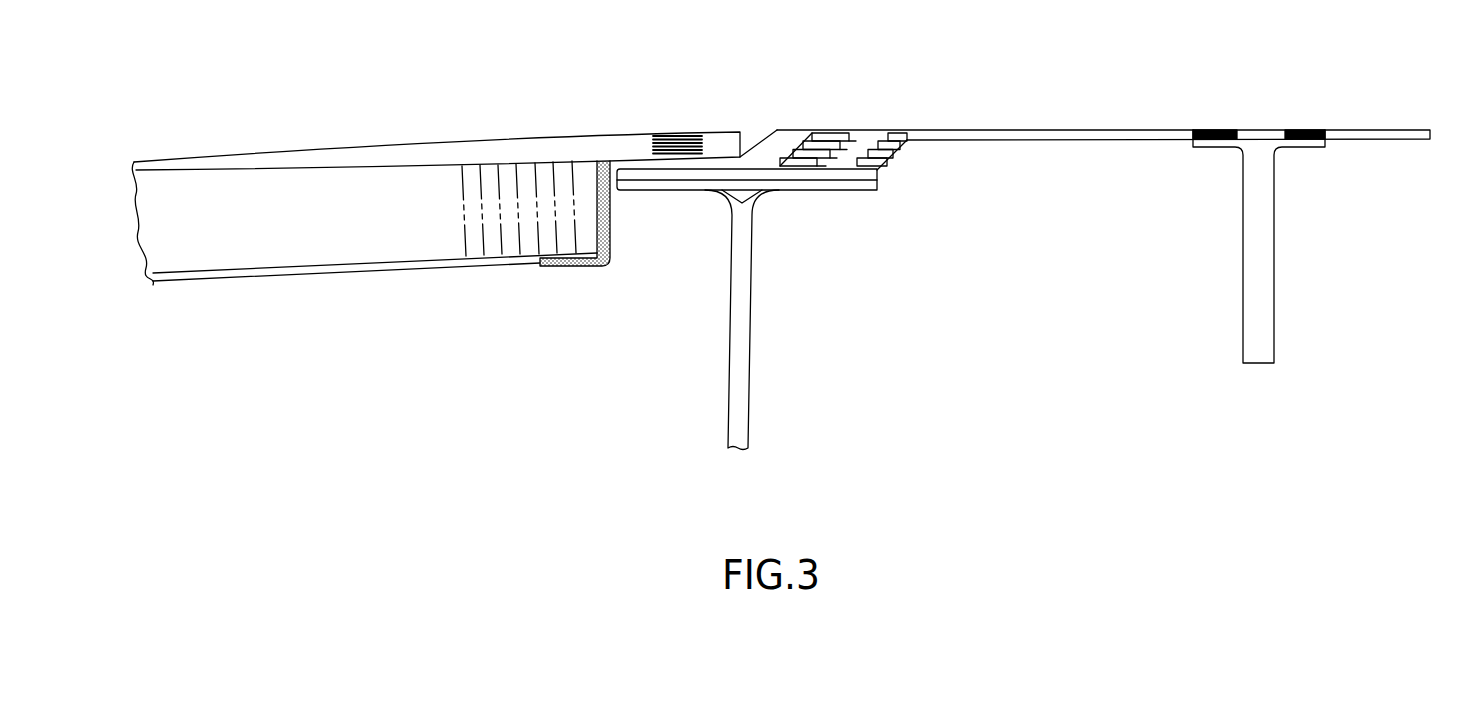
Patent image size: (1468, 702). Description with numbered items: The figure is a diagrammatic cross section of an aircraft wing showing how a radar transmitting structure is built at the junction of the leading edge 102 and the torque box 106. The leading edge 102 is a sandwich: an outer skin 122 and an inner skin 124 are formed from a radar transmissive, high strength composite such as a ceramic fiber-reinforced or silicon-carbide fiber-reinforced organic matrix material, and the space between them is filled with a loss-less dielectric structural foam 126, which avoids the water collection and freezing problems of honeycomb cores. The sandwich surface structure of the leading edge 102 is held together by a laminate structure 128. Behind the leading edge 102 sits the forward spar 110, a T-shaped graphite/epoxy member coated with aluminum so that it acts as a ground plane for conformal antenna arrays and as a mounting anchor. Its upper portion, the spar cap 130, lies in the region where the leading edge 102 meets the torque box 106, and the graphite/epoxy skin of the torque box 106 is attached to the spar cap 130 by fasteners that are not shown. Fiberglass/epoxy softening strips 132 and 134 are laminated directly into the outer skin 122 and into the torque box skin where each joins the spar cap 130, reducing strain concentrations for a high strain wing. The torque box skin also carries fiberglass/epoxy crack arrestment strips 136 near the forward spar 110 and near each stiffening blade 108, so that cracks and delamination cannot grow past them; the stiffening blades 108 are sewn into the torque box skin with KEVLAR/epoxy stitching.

The leading edge 102 is at (137, 203).
The torque box 106 is at (1088, 133).
The stiffening blade 108 is at (1247, 247).
The forward spar 110 is at (744, 338).
The outer skin 122 is at (325, 160).
The inner skin 124 is at (355, 270).
The structural foam 126 is at (255, 253).
The laminate structure 128 is at (613, 237).
The spar cap 130 is at (878, 180).
The softening strip 132 is at (688, 133).
The softening strip 134 is at (836, 132).
The crack arrestment strip 136 is at (900, 132).